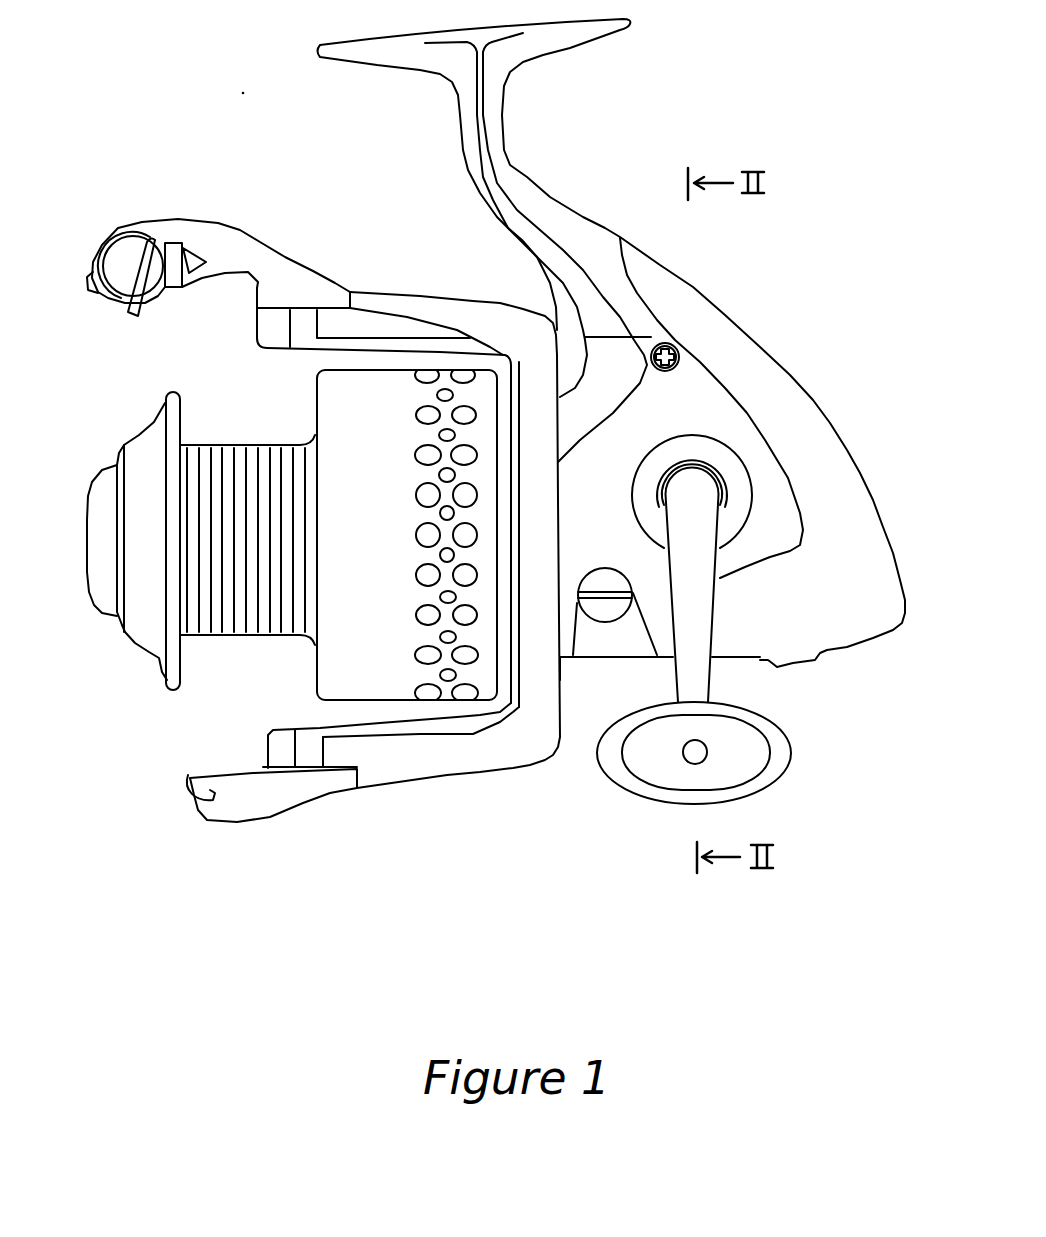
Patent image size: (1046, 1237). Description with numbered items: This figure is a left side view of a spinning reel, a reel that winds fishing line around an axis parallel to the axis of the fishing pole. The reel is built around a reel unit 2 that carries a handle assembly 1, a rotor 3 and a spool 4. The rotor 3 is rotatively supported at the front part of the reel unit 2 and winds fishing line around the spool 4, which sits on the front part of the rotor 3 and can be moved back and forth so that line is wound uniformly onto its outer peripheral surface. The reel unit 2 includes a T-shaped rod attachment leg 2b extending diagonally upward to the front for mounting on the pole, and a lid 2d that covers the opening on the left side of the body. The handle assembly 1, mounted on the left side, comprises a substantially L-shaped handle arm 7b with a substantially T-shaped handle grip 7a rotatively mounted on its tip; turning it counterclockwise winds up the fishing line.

The handle assembly 1 is at (708, 683).
The reel unit 2 is at (703, 391).
The rod attachment leg 2b is at (497, 137).
The lid 2d is at (720, 423).
The rotor 3 is at (462, 317).
The spool 4 is at (245, 612).
The handle grip 7a is at (782, 752).
The handle arm 7b is at (697, 593).